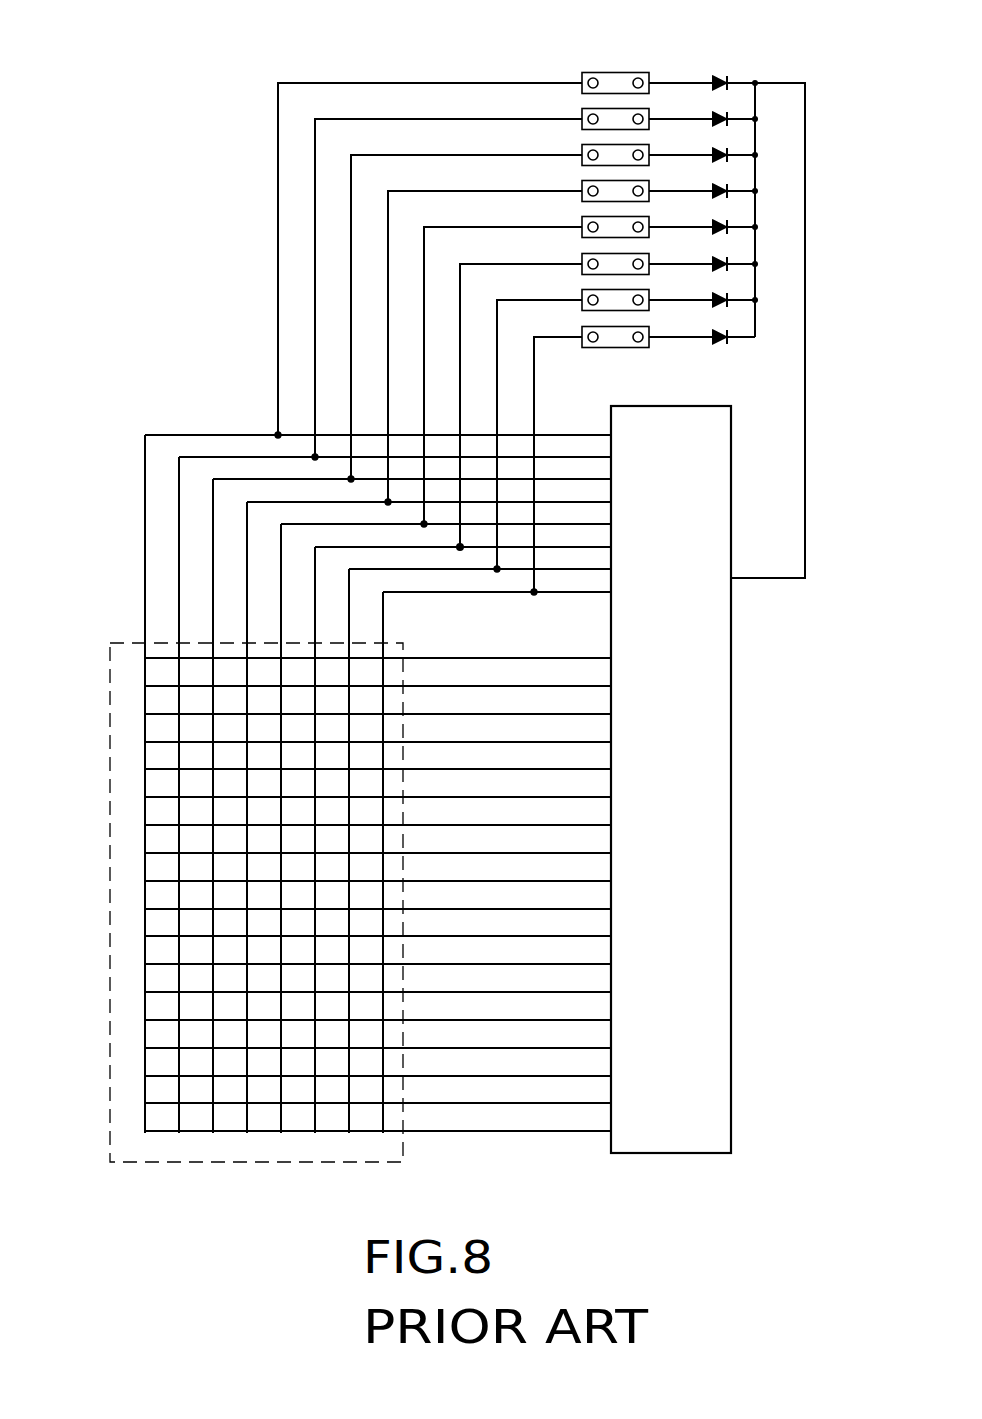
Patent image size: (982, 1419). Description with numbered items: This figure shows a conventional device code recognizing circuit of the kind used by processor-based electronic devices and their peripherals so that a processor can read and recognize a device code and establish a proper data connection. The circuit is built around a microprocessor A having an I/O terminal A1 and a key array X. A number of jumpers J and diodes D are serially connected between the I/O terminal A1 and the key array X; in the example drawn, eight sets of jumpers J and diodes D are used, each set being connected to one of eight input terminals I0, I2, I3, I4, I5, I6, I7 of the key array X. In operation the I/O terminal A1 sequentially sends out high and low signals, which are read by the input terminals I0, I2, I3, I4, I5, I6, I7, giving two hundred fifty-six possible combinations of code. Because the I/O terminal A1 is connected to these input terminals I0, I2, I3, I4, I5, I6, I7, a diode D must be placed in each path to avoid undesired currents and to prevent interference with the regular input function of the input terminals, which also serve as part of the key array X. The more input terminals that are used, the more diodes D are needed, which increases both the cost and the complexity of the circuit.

The input terminal I0 is at (278, 362).
The input terminal I2 is at (314, 323).
The input terminal I3 is at (350, 275).
The input terminal I4 is at (387, 223).
The input terminal I5 is at (507, 225).
The input terminal I6 is at (563, 297).
The input terminal I7 is at (534, 402).
The jumper J is at (630, 72).
The diode D is at (720, 78).
The I/O terminal A1 is at (805, 498).
The microprocessor A is at (717, 747).
The key array X is at (110, 672).